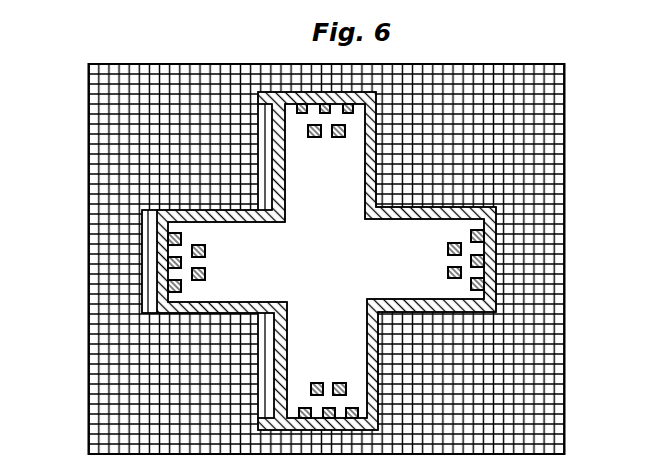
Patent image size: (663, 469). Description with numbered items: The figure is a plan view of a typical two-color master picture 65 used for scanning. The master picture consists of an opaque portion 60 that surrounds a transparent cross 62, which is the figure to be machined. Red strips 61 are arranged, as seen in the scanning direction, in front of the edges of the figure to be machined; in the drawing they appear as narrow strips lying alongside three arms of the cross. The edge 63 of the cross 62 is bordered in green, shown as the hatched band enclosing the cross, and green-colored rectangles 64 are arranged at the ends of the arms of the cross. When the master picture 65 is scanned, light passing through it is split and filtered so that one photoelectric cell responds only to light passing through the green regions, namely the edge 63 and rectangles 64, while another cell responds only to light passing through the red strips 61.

The opaque portion 60 is at (530, 113).
The red strips 61 is at (268, 358).
The transparent cross 62 is at (370, 277).
The edge of the cross 63 is at (373, 121).
The green-colored rectangles 64 is at (318, 118).
The master picture 65 is at (563, 258).